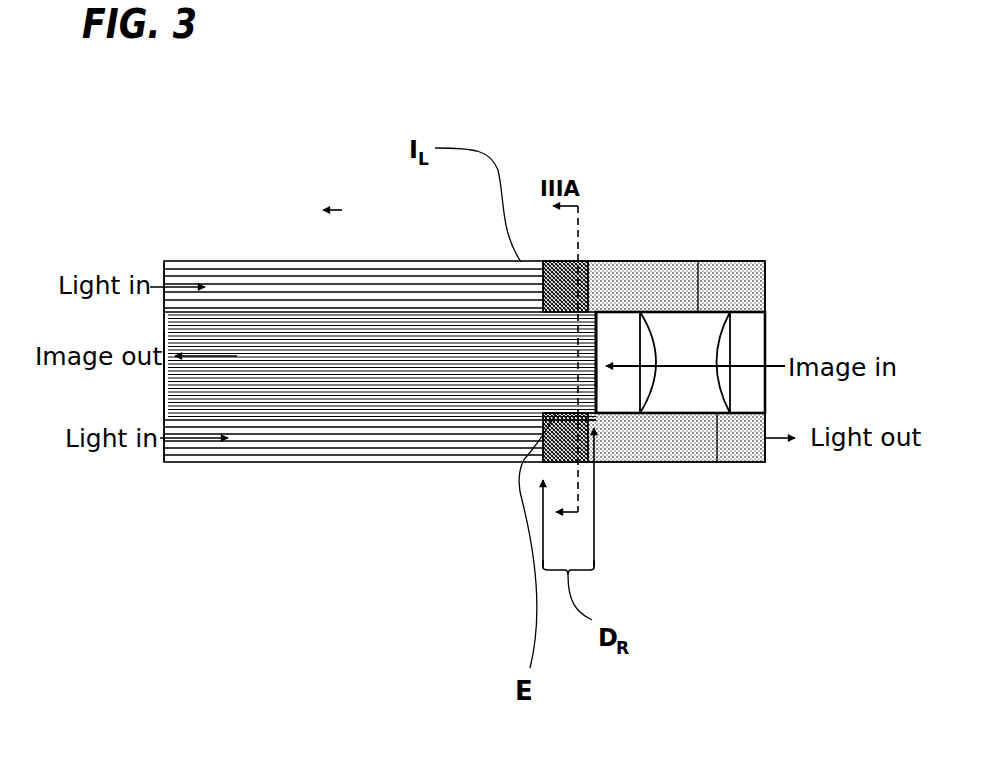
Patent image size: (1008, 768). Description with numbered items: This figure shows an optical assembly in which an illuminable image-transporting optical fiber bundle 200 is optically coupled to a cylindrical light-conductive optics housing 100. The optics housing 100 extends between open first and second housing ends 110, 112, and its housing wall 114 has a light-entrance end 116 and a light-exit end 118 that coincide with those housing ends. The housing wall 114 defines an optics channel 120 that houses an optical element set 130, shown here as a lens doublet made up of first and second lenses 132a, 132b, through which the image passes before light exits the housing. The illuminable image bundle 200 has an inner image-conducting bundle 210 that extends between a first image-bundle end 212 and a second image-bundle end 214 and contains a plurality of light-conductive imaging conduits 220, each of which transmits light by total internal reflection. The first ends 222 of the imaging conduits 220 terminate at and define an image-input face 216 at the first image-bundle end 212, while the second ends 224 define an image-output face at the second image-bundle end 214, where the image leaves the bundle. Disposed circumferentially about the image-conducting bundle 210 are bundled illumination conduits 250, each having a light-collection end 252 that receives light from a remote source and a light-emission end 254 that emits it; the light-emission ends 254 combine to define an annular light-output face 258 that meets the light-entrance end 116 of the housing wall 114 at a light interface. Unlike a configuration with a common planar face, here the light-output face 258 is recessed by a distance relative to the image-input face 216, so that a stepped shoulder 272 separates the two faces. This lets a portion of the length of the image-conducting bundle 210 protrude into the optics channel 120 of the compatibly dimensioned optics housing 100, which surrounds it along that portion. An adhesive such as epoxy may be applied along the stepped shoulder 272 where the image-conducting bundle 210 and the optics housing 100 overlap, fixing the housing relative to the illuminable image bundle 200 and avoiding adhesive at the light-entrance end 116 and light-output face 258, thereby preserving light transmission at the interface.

The optics housing 100 is at (627, 262).
The first housing end 110 is at (553, 262).
The second housing end 112 is at (753, 262).
The housing wall 114 is at (735, 275).
The light-entrance end 116 is at (533, 262).
The light-exit end 118 is at (767, 283).
The optics channel 120 is at (695, 340).
The optical element set 130 is at (625, 377).
The first lens 132a is at (750, 353).
The second lens 132b is at (620, 397).
The illuminable image-transporting optical fiber bundle 200 is at (371, 220).
The image-conducting bundle 210 is at (290, 393).
The first image-bundle end 212 is at (590, 398).
The second image-bundle end 214 is at (163, 380).
The image-input face 216 is at (509, 453).
The imaging conduits 220 is at (320, 395).
The first ends of imaging conduits 222 is at (590, 384).
The second ends of imaging conduits 224 is at (163, 398).
The illumination conduits 250 is at (262, 272).
The light-collection end 252 is at (165, 272).
The light-emission end 254 is at (540, 297).
The light-output face 258 is at (547, 305).
The stepped shoulder 272 is at (590, 262).